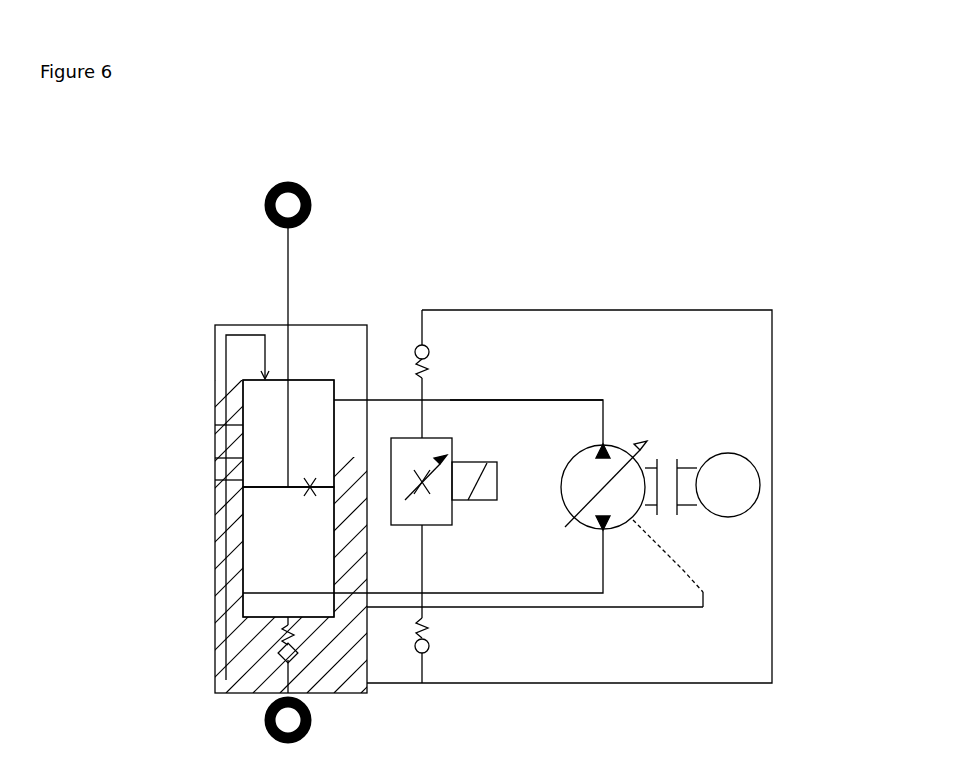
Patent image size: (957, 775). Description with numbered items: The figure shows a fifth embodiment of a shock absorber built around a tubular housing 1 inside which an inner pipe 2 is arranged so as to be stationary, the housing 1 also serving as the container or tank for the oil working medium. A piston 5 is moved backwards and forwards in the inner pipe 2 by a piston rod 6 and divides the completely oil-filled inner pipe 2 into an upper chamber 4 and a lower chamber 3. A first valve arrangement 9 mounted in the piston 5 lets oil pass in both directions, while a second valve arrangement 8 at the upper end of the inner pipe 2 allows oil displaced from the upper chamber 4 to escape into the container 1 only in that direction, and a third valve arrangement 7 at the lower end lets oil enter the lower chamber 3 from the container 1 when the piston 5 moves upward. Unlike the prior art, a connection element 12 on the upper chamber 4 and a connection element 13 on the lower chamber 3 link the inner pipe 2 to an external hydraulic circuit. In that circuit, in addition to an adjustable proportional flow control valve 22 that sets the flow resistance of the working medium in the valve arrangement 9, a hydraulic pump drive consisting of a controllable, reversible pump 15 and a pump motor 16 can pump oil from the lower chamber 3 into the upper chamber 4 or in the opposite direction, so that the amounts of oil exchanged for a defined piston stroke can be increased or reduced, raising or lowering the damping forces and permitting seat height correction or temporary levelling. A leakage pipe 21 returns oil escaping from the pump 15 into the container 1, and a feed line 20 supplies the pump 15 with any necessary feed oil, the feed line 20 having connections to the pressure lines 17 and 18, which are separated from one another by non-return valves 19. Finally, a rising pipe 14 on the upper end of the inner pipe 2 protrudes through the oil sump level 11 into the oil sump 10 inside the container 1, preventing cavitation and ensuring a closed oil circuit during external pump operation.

The housing 1 is at (337, 536).
The inner pipe 2 is at (203, 498).
The lower chamber 3 is at (220, 586).
The upper chamber 4 is at (219, 401).
The piston 5 is at (223, 446).
The piston rod 6 is at (218, 337).
The third valve arrangement 7 is at (188, 685).
The second valve arrangement 8 is at (175, 473).
The first valve arrangement 9 is at (203, 571).
The oil sump 10 is at (172, 478).
The oil sump level 11 is at (182, 441).
The connection element 12 is at (468, 348).
The connection element 13 is at (468, 638).
The rising pipe 14 is at (165, 396).
The controllable pump 15 is at (690, 404).
The pump motor 16 is at (743, 436).
The pressure line 17 is at (568, 339).
The pressure line 18 is at (535, 669).
The non-return valves 19 is at (491, 492).
The feed line 20 is at (569, 529).
The leakage pipe 21 is at (753, 556).
The adjustable proportional flow control valve 22 is at (539, 383).